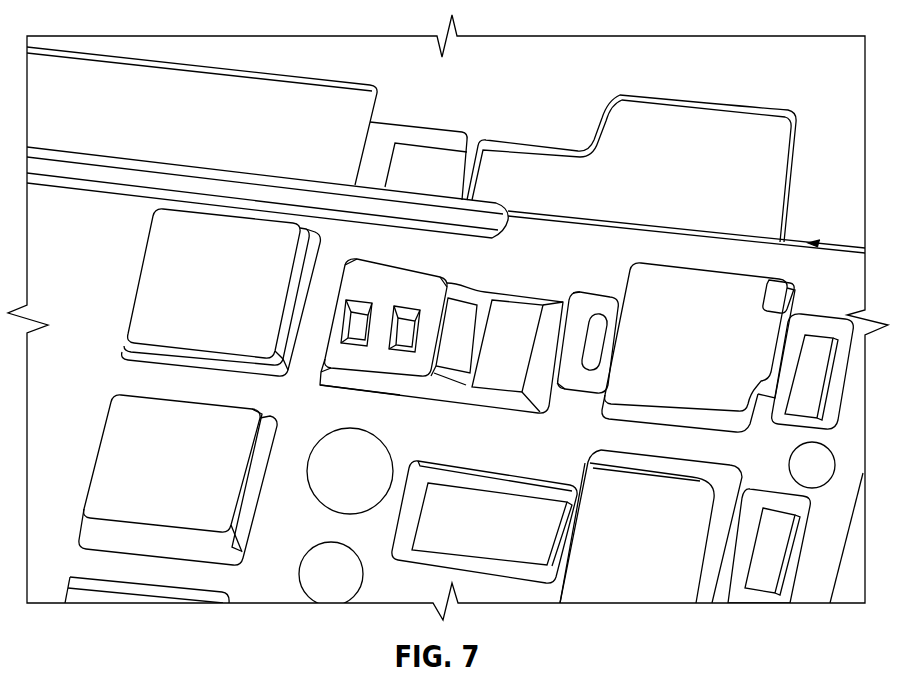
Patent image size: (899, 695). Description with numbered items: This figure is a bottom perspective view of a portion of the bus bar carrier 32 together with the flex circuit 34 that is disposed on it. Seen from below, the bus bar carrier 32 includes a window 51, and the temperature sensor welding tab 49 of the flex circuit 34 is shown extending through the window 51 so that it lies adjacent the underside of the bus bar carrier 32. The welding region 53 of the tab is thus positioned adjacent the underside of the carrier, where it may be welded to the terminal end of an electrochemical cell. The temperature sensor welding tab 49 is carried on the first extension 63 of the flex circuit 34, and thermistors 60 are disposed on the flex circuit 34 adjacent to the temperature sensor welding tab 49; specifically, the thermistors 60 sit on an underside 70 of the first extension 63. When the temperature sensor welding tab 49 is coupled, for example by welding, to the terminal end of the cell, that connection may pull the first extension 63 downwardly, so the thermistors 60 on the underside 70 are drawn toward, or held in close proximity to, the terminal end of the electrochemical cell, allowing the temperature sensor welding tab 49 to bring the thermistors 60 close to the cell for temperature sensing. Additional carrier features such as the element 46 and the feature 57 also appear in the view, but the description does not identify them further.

The bus bar carrier 32 is at (300, 175).
The flex circuit 34 is at (391, 288).
The cover plate 46 is at (807, 275).
The temperature sensor welding tab 49 is at (463, 315).
The window 51 is at (465, 268).
The welding region 53 is at (513, 310).
The rib 57 is at (452, 362).
The thermistors 60 is at (366, 356).
The first extension 63 is at (335, 360).
The underside 70 is at (353, 280).